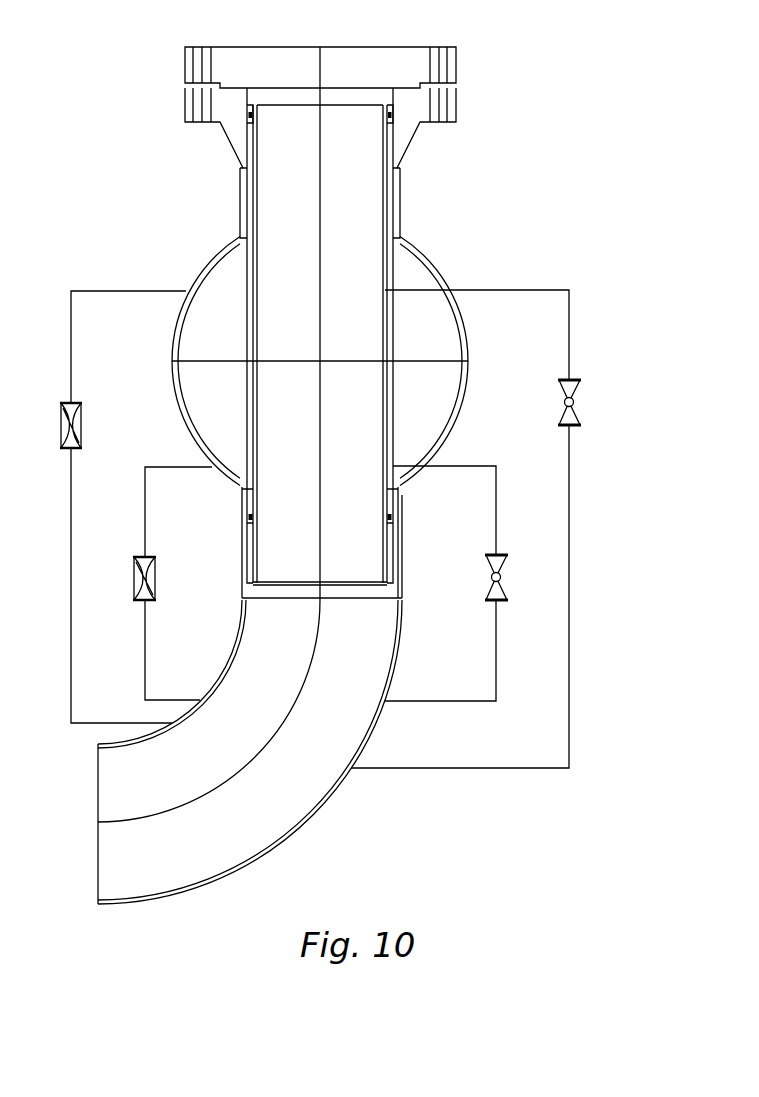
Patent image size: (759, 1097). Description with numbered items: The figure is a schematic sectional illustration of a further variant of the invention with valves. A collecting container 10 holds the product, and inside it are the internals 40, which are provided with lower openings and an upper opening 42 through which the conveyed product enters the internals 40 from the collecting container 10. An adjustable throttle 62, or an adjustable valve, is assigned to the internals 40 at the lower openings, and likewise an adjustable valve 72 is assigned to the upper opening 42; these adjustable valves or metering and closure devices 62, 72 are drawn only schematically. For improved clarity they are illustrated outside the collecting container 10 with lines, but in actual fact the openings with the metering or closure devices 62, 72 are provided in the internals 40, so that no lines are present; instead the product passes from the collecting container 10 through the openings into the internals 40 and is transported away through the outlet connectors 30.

The collecting container 10 is at (176, 345).
The outlet connectors 30 is at (287, 838).
The internals 40 is at (253, 285).
The upper opening 42 is at (385, 288).
The adjustable throttle 62 is at (505, 568).
The adjustable valve 72 is at (578, 391).